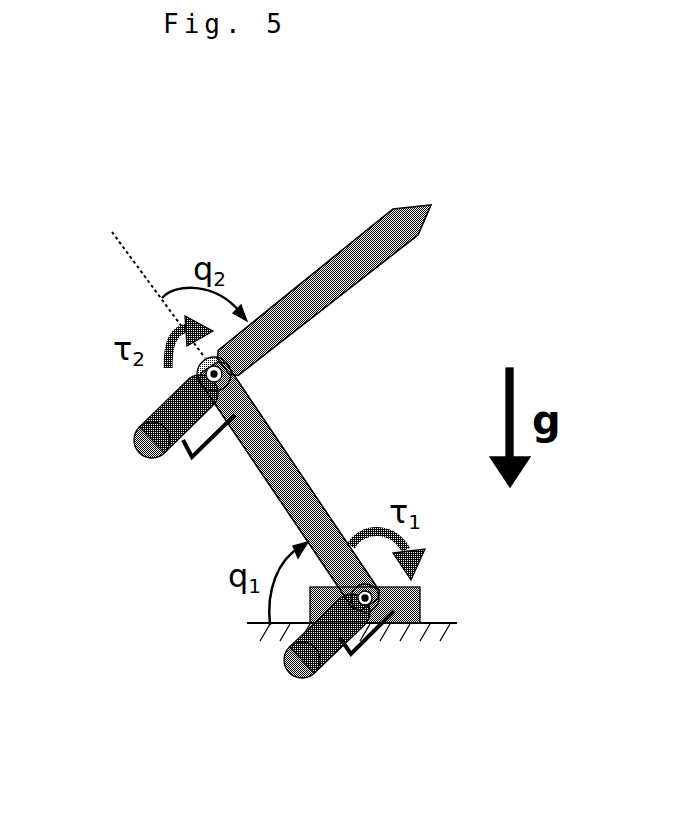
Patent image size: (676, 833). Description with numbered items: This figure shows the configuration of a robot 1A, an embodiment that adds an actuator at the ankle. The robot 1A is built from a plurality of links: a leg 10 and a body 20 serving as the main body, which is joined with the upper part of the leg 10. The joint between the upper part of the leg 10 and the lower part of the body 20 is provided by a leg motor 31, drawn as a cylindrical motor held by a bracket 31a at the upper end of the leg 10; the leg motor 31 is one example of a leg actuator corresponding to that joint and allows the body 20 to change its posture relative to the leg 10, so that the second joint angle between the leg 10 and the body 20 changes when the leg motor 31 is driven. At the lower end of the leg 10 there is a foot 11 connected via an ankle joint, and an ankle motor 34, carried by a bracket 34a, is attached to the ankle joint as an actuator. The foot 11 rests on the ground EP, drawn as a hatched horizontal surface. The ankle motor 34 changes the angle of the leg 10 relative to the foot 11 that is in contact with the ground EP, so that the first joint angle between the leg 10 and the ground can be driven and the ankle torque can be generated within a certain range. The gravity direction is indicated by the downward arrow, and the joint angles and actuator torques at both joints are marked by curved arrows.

The robot 1A is at (398, 371).
The leg 10 is at (307, 480).
The body 20 is at (390, 260).
The foot 11 is at (423, 600).
The leg motor 31 is at (135, 430).
The bracket of second motor 31a is at (203, 455).
The ankle motor 34 is at (310, 683).
The bracket of first motor 34a is at (363, 652).
The ground/end plane EP is at (403, 627).